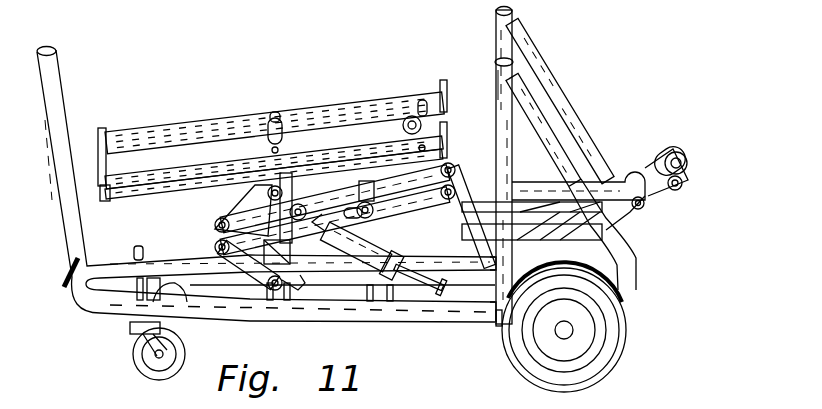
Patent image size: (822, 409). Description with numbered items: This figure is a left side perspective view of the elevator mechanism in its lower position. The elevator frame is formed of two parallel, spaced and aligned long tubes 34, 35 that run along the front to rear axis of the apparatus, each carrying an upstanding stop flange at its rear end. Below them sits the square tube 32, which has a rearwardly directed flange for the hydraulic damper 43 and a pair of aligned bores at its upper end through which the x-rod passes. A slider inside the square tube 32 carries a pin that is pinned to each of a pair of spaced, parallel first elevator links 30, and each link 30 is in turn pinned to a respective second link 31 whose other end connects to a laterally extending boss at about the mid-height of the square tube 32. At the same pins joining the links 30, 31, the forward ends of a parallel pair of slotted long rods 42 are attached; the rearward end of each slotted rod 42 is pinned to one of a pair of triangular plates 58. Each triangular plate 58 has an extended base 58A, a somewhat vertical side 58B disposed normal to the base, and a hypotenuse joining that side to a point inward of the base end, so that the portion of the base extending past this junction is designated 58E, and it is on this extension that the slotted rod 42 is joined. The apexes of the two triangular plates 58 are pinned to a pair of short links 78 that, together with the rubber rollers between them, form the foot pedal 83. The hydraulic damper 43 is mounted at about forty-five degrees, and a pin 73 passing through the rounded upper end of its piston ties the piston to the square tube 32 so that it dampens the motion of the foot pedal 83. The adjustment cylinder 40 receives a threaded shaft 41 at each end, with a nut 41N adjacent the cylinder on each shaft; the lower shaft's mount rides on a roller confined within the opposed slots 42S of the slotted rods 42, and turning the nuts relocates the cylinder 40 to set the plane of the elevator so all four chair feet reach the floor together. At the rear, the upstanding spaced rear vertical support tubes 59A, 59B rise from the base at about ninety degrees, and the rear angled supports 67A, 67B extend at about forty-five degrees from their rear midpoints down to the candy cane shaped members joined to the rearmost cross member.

The first elevator link 30 is at (243, 282).
The second link 31 is at (212, 210).
The square tube 32 is at (258, 170).
The long tube 34 is at (231, 116).
The long tube 35 is at (119, 191).
The adjustment cylinder 40 is at (437, 152).
The threaded shaft 41 is at (339, 172).
The nut 41N is at (366, 190).
The slotted long rod 42 is at (310, 238).
The slot 42S is at (358, 217).
The hydraulic damper 43 is at (360, 250).
The triangular plate 58 is at (497, 195).
The base 58A is at (467, 250).
The vertical side 58B is at (622, 213).
The extended base portion 58E is at (457, 207).
The rear vertical support tube 59A is at (496, 88).
The rear vertical support tube 59B is at (497, 42).
The rear angled support 67A is at (556, 143).
The rear angled support 67B is at (545, 82).
The pin 73 is at (248, 212).
The short link 78 is at (646, 204).
The foot pedal / small area 83 is at (667, 126).